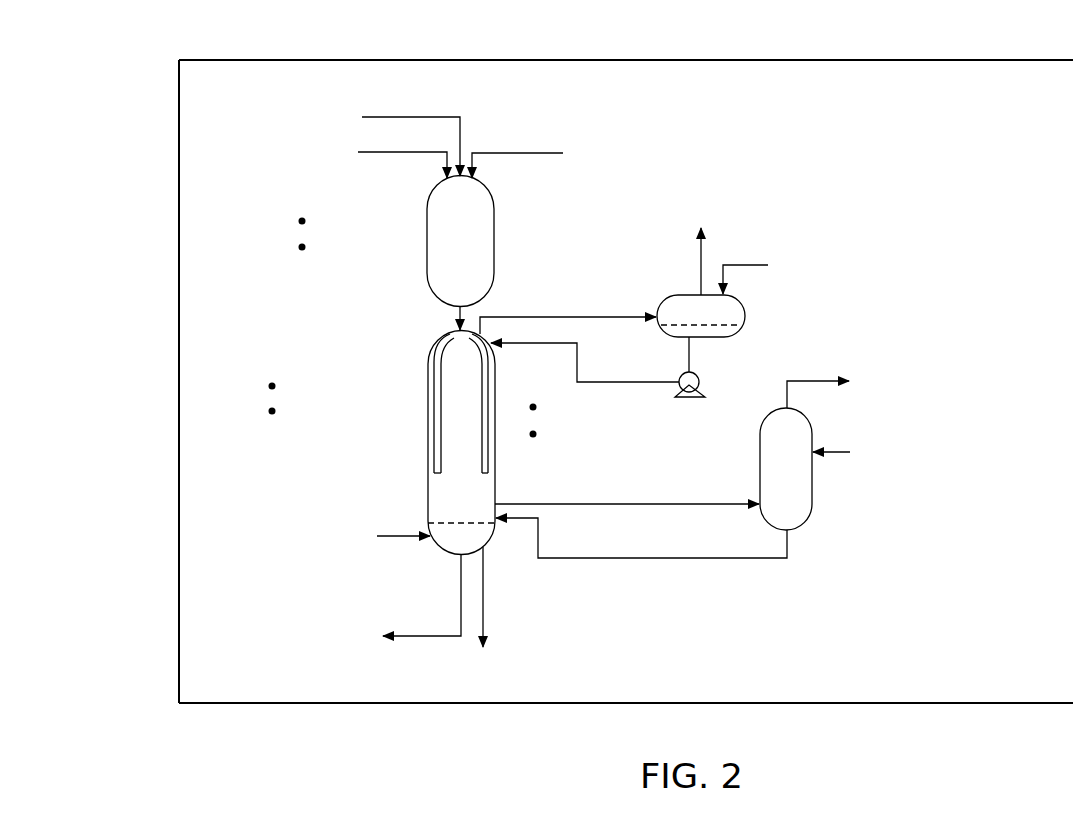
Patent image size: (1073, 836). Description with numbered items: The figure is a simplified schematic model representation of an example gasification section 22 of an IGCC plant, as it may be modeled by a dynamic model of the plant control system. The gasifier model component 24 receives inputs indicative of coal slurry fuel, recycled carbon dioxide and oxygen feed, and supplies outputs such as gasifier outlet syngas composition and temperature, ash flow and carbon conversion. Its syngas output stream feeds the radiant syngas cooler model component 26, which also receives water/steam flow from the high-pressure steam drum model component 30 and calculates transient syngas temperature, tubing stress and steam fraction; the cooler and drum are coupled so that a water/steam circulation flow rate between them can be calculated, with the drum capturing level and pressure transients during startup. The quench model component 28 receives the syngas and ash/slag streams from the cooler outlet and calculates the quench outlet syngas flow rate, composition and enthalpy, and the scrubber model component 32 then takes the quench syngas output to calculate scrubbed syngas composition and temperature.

The gasification section 22 is at (880, 60).
The gasifier model component 24 is at (446, 302).
The radiant syngas cooler (RSC) model component 26 is at (428, 473).
The RSC quench model component 28 is at (443, 559).
The high-pressure (HP) steam drum model component 30 is at (737, 335).
The scrubber model component 32 is at (803, 532).